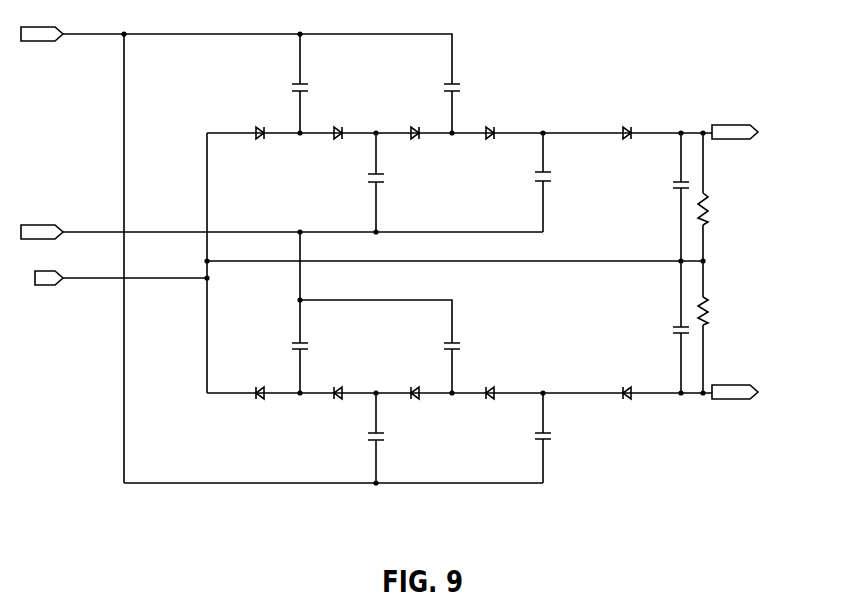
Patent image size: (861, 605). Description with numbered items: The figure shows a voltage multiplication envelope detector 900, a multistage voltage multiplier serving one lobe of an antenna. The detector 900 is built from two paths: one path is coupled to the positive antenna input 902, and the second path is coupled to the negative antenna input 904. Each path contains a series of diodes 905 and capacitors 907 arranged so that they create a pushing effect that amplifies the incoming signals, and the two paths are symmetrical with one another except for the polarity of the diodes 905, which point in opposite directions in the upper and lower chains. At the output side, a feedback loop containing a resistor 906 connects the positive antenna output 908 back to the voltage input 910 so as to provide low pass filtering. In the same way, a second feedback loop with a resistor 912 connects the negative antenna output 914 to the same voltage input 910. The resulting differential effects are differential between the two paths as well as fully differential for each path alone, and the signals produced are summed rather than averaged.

The voltage multiplication envelope detector 900 is at (668, 75).
The positive antenna input 902 is at (48, 43).
The negative antenna input 904 is at (53, 222).
The diode 905 is at (490, 127).
The resistor 906 is at (712, 208).
The capacitor 907 is at (549, 170).
The positive antenna output 908 is at (737, 124).
The voltage input 910 is at (42, 287).
The resistor 912 is at (712, 305).
The negative antenna output 914 is at (740, 383).